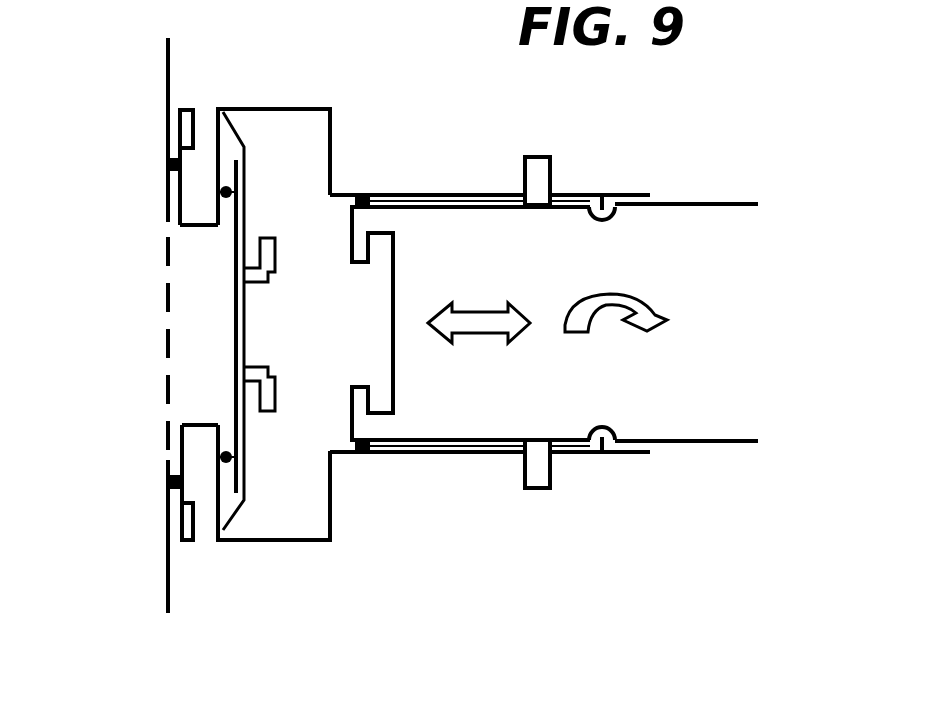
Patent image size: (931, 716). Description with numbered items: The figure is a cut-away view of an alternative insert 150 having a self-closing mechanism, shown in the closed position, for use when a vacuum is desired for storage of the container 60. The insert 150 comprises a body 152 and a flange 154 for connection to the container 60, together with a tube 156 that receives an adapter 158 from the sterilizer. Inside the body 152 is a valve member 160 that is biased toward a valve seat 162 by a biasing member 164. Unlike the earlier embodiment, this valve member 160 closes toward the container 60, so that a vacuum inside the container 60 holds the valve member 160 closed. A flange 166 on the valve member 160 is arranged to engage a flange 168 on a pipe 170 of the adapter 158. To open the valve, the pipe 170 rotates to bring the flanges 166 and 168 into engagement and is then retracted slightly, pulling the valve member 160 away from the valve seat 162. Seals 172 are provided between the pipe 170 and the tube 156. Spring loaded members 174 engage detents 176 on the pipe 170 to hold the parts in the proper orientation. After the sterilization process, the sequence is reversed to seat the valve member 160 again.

The container 60 is at (166, 594).
The alternative insert 150 is at (353, 128).
The body 152 is at (296, 108).
The flange 154 is at (179, 216).
The tube 156 is at (412, 192).
The adapter 158 is at (713, 452).
The valve member 160 is at (243, 333).
The valve seat 162 is at (222, 457).
The biasing member 164 is at (234, 122).
The flange 166 is at (276, 258).
The flange 168 is at (370, 402).
The pipe 170 is at (729, 202).
The seals 172 is at (357, 456).
The spring loaded members 174 is at (551, 171).
The detents 176 is at (603, 196).